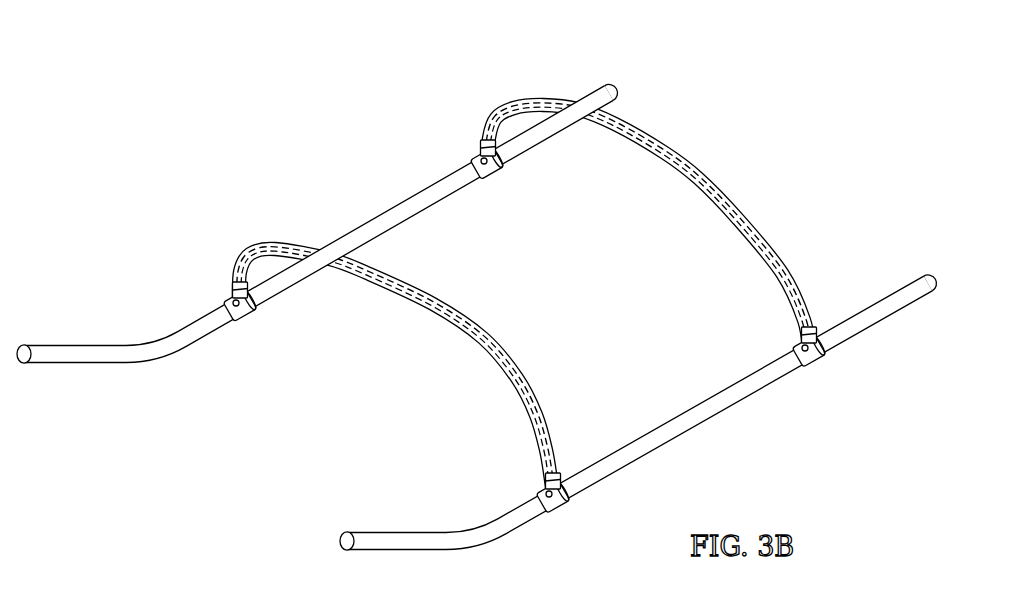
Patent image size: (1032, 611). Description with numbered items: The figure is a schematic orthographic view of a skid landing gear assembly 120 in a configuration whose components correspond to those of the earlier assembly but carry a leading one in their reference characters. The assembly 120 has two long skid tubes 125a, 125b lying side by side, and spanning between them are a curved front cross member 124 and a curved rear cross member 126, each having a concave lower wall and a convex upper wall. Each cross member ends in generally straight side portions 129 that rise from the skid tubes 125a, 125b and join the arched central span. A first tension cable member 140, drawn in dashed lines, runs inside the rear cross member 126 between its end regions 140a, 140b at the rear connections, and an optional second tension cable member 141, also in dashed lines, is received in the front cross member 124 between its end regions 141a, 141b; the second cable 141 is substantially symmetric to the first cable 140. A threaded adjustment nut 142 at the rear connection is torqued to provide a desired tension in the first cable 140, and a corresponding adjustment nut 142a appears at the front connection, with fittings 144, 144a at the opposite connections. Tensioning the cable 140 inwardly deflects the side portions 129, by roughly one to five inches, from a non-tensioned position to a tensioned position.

The skid landing gear assembly 120 is at (477, 317).
The front cross member 124 is at (396, 373).
The first side rail 125a is at (704, 421).
The second side rail 125b is at (381, 216).
The rear cross member 126 is at (648, 228).
The side portions 129 is at (487, 124).
The first tension cable member 140 is at (728, 201).
The rear arch first connector 140a is at (859, 360).
The rear arch second connector 140b is at (495, 166).
The second tension cable member 141 is at (474, 346).
The front arch first connector 141a is at (603, 505).
The front arch second connector 141b is at (237, 312).
The threaded adjustment nut 142 is at (823, 358).
The connector collar 142a is at (571, 502).
The connector sleeve 144 is at (474, 165).
The connector sleeve 144a is at (226, 308).